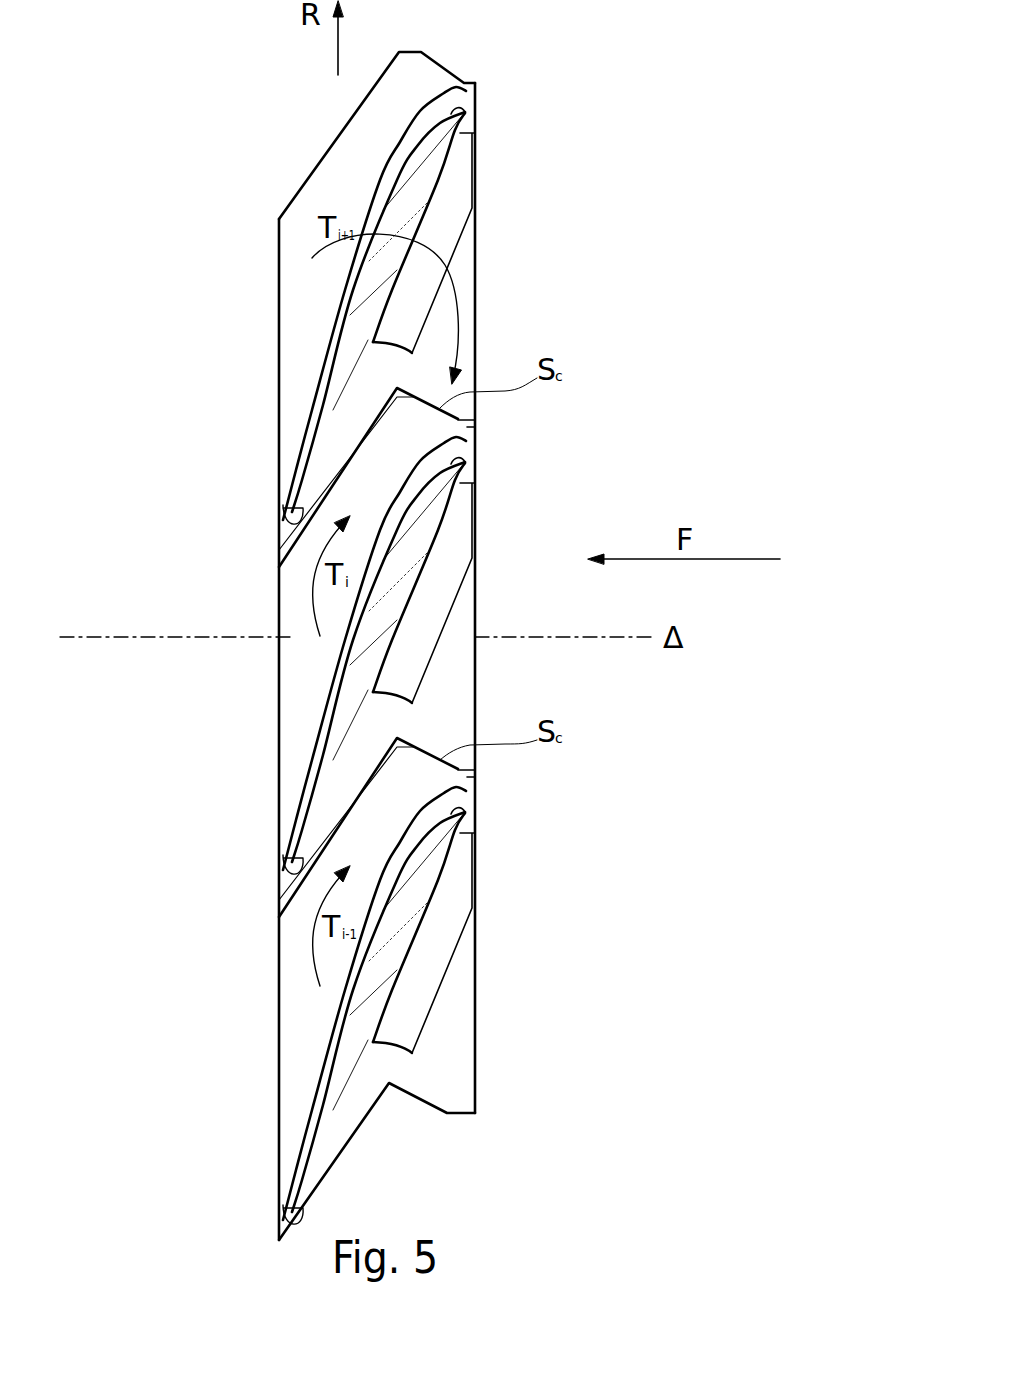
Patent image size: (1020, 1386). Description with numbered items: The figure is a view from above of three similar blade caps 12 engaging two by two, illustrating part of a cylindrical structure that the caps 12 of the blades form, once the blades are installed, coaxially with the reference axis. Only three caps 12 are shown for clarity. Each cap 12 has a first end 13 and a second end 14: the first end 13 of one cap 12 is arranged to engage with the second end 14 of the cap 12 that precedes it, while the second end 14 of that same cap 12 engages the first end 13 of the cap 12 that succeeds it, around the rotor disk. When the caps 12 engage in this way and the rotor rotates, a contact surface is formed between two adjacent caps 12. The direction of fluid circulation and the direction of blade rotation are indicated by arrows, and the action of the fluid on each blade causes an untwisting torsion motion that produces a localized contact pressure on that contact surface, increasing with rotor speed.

The cap 12 is at (213, 1060).
The first end 13 is at (398, 384).
The second end 14 is at (377, 422).